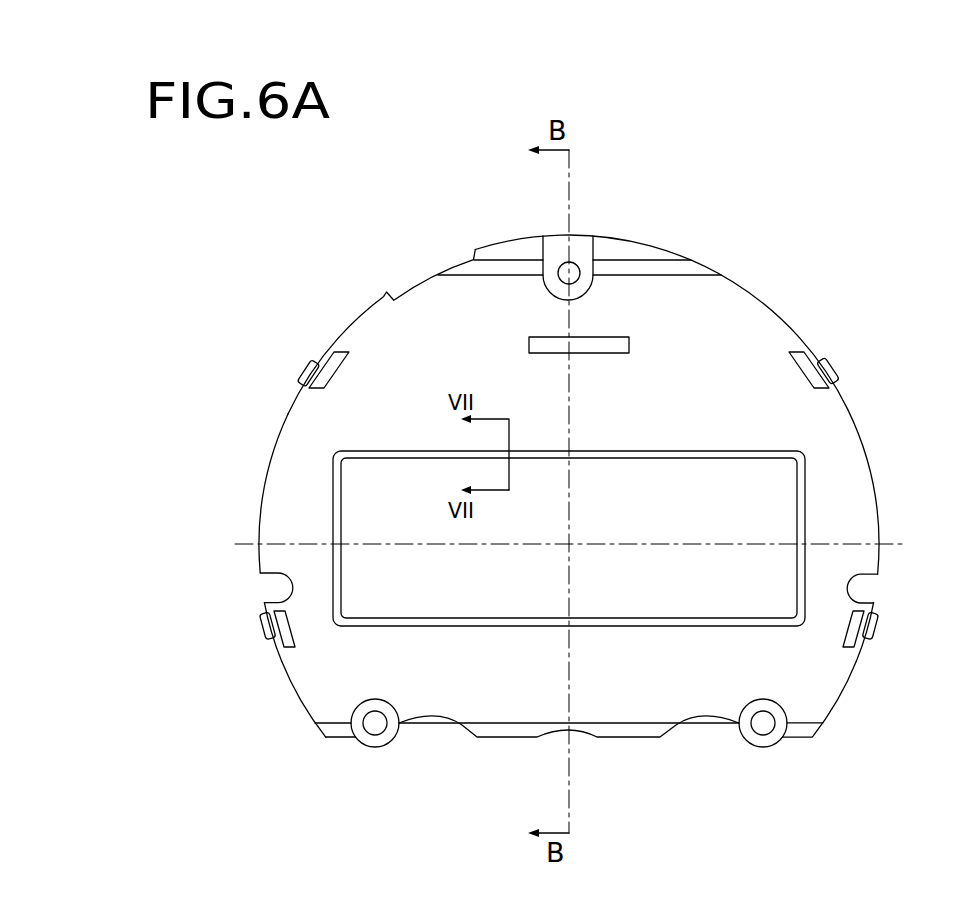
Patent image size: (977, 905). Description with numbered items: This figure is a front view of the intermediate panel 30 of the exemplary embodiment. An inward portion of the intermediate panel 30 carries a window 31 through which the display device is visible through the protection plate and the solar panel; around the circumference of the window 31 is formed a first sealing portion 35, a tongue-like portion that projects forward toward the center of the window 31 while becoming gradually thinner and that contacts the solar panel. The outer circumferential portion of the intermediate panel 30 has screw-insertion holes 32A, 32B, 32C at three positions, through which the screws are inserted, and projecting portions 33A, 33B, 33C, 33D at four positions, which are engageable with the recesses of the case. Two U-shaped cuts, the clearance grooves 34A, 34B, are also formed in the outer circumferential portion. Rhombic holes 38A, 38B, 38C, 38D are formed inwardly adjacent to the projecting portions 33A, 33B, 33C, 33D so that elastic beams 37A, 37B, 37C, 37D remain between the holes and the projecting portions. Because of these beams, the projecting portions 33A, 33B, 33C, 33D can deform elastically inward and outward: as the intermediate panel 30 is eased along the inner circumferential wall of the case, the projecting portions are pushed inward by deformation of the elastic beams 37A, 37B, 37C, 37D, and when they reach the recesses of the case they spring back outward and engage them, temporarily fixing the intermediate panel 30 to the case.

The intermediate panel 30 is at (741, 306).
The window 31 is at (783, 493).
The screw-insertion hole 32A is at (577, 268).
The screw-insertion hole 32B is at (377, 732).
The screw-insertion hole 32C is at (764, 732).
The projecting portion 33A is at (302, 367).
The projecting portion 33B is at (259, 628).
The projecting portion 33C is at (834, 367).
The projecting portion 33D is at (879, 628).
The clearance groove 34A is at (264, 592).
The clearance groove 34B is at (868, 576).
The first sealing portion 35 is at (657, 452).
The elastic beam 37A is at (300, 382).
The elastic beam 37B is at (273, 640).
The elastic beam 37C is at (836, 382).
The elastic beam 37D is at (862, 645).
The rhombic hole 38A is at (337, 370).
The rhombic hole 38B is at (295, 637).
The rhombic hole 38C is at (802, 372).
The rhombic hole 38D is at (843, 632).